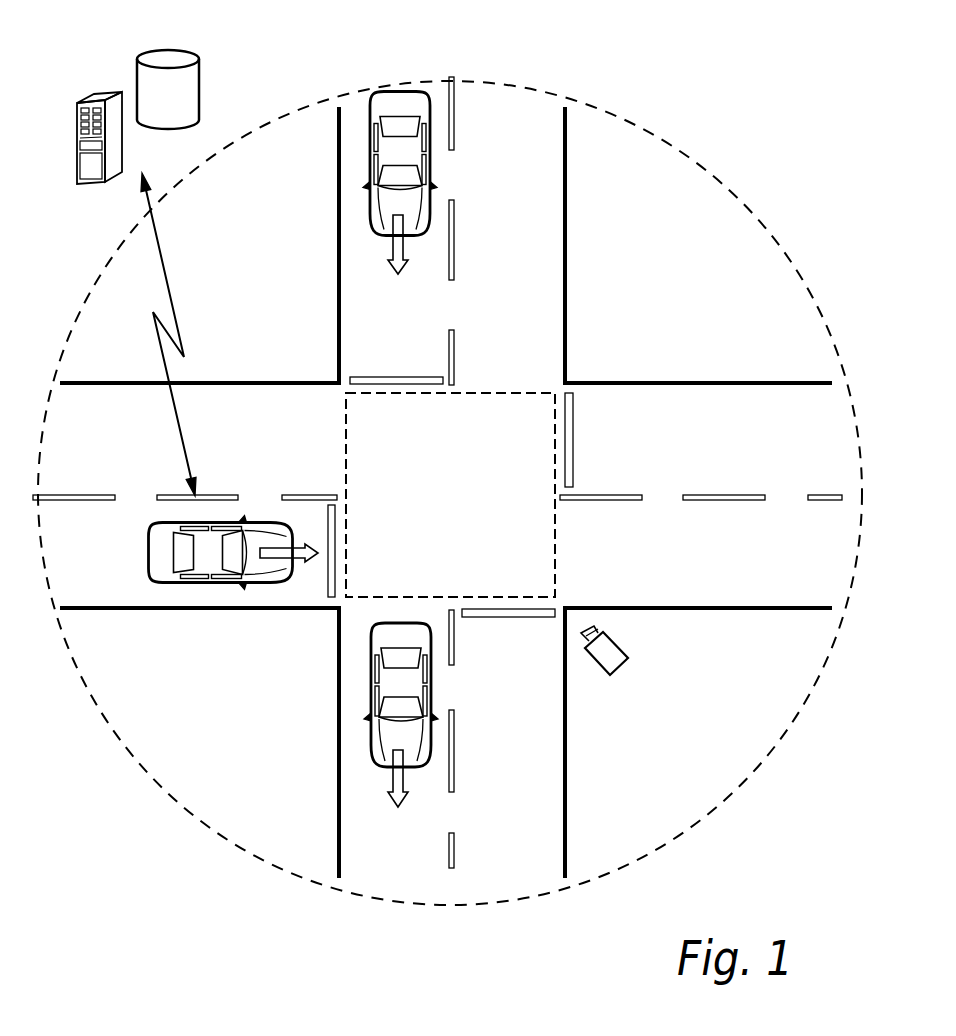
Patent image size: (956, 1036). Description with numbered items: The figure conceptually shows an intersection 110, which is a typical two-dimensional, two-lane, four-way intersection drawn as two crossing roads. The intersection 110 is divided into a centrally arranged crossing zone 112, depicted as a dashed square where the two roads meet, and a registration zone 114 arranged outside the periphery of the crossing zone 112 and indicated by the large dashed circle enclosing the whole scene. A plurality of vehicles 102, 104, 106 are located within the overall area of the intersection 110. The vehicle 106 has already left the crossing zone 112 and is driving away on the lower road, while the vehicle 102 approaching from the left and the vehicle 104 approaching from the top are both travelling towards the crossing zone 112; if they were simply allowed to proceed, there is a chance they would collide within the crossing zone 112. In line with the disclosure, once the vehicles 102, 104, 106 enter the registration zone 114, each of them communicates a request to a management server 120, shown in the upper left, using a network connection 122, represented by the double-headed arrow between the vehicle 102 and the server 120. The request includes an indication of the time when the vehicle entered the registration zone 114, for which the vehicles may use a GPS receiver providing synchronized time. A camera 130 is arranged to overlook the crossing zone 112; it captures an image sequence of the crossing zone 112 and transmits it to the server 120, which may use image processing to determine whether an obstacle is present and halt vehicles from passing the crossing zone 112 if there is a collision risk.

The vehicle 102 is at (208, 562).
The vehicle 104 is at (412, 150).
The vehicle 106 is at (372, 695).
The intersection 110 is at (697, 105).
The crossing zone 112 is at (347, 442).
The registration zone 114 is at (170, 793).
The management server 120 is at (228, 78).
The network connection 122 is at (170, 289).
The camera 130 is at (598, 662).